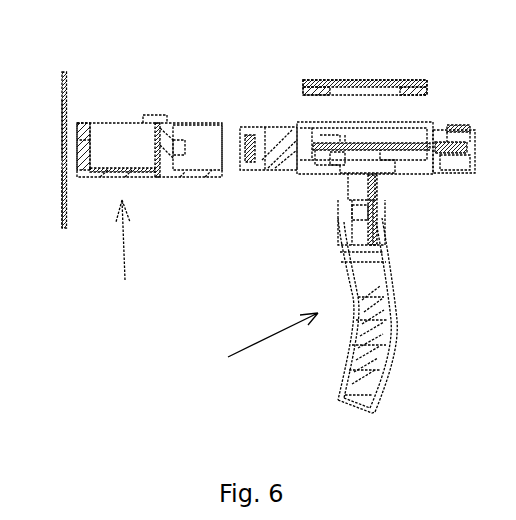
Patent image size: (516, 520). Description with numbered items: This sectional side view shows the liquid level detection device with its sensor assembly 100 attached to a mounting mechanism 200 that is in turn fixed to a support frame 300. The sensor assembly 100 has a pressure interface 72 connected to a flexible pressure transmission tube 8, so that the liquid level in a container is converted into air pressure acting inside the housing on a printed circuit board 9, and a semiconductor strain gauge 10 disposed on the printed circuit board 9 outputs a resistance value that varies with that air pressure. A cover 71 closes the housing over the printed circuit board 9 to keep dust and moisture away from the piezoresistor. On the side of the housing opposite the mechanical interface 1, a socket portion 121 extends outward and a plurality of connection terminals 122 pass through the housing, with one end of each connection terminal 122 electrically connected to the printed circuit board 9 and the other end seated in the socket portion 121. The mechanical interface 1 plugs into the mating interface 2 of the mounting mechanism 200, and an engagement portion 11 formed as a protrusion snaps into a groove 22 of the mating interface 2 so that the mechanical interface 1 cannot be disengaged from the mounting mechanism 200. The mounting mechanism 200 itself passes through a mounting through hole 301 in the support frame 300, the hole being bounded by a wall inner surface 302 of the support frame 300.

The mechanical interface 1 is at (270, 127).
The mating interface 2 is at (201, 128).
The pressure transmission tube 8 is at (395, 327).
The printed circuit board 9 is at (347, 142).
The semiconductor strain gauge 10 is at (367, 148).
The engagement portion 11 is at (247, 169).
The groove 22 is at (183, 175).
The cover 71 is at (363, 80).
The pressure interface 72 is at (373, 178).
The sensor assembly 100 is at (251, 347).
The socket portion 121 is at (453, 175).
The connection terminal 122 is at (443, 168).
The mounting mechanism 200 is at (121, 253).
The support frame 300 is at (67, 97).
The mounting through hole 301 is at (61, 141).
The wall inner surface 302 is at (62, 197).